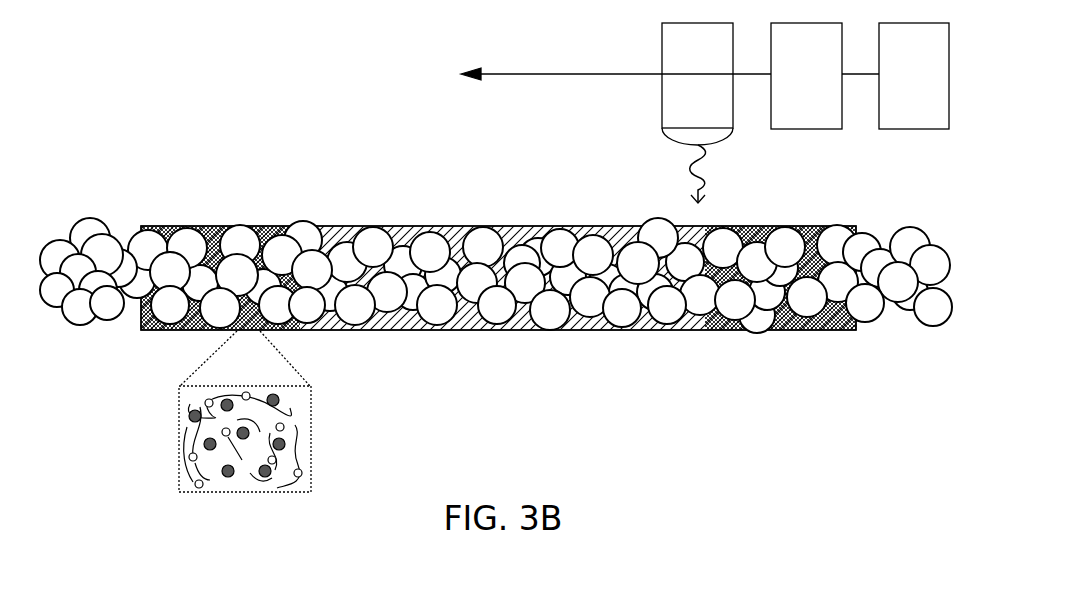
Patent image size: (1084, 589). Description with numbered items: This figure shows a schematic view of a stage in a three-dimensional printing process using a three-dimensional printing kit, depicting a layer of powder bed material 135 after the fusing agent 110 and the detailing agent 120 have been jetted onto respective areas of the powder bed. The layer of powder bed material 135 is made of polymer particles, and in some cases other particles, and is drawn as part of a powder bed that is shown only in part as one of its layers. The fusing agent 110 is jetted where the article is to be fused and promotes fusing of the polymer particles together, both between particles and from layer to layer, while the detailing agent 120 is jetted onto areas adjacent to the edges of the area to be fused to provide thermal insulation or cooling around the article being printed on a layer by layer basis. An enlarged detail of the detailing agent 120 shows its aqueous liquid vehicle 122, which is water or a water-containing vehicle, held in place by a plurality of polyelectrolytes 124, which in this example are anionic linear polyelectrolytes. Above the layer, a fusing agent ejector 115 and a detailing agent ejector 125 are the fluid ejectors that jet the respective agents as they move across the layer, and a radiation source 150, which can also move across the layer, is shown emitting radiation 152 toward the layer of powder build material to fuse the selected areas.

The fusing agent 110 is at (535, 236).
The detailing agent 120 is at (268, 227).
The aqueous liquid vehicle 122 is at (280, 397).
The polyelectrolytes 124 is at (295, 437).
The layer of powder bed material 135 is at (90, 237).
The radiation source 150 is at (616, 84).
The detailing agent ejector 125 is at (825, 76).
The fusing agent ejector 115 is at (914, 76).
The radiation 152 is at (688, 190).